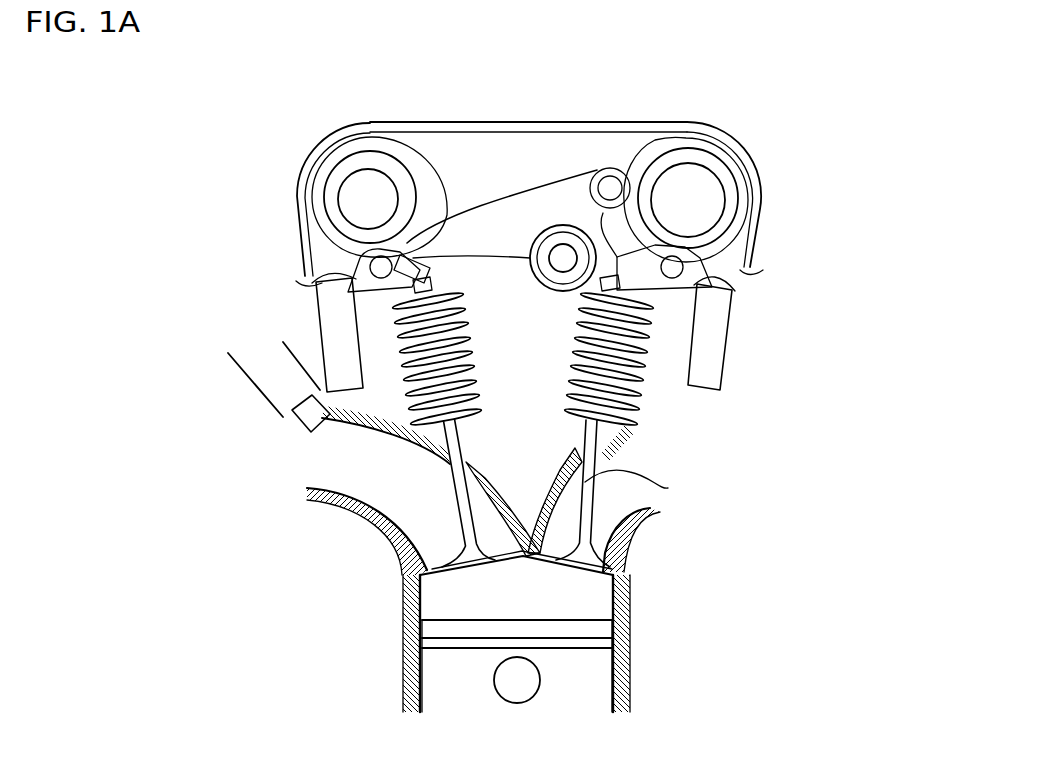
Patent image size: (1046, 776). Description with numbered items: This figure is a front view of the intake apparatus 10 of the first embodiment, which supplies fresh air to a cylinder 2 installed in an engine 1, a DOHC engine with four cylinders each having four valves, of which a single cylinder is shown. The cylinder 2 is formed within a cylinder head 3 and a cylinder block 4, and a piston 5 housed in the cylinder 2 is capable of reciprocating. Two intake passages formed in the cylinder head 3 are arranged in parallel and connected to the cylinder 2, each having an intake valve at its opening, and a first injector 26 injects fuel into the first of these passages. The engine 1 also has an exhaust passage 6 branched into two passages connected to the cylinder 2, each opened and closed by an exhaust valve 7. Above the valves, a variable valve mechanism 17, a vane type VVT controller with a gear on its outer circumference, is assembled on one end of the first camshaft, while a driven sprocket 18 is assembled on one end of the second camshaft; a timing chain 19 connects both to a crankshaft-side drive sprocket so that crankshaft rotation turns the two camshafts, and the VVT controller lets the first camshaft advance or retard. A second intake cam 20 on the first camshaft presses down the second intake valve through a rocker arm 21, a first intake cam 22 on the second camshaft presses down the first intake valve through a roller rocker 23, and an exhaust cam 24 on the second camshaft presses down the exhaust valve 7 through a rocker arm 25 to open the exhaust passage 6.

The engine 1 is at (780, 736).
The cylinder 2 is at (577, 604).
The cylinder head 3 is at (397, 568).
The cylinder block 4 is at (630, 680).
The piston 5 is at (445, 668).
The exhaust passage 6 is at (640, 514).
The exhaust valve 7 is at (585, 482).
The intake apparatus 10 is at (199, 204).
The variable valve mechanism 17 is at (303, 235).
The driven sprocket 18 is at (670, 135).
The timing chain 19 is at (548, 120).
The second intake cam 20 is at (335, 180).
The rocker arm 21 is at (335, 300).
The first intake cam 22 is at (735, 178).
The roller rocker 23 is at (500, 265).
The exhaust cam 24 is at (762, 212).
The rocker arm 25 is at (712, 300).
The first injector 26 is at (285, 402).